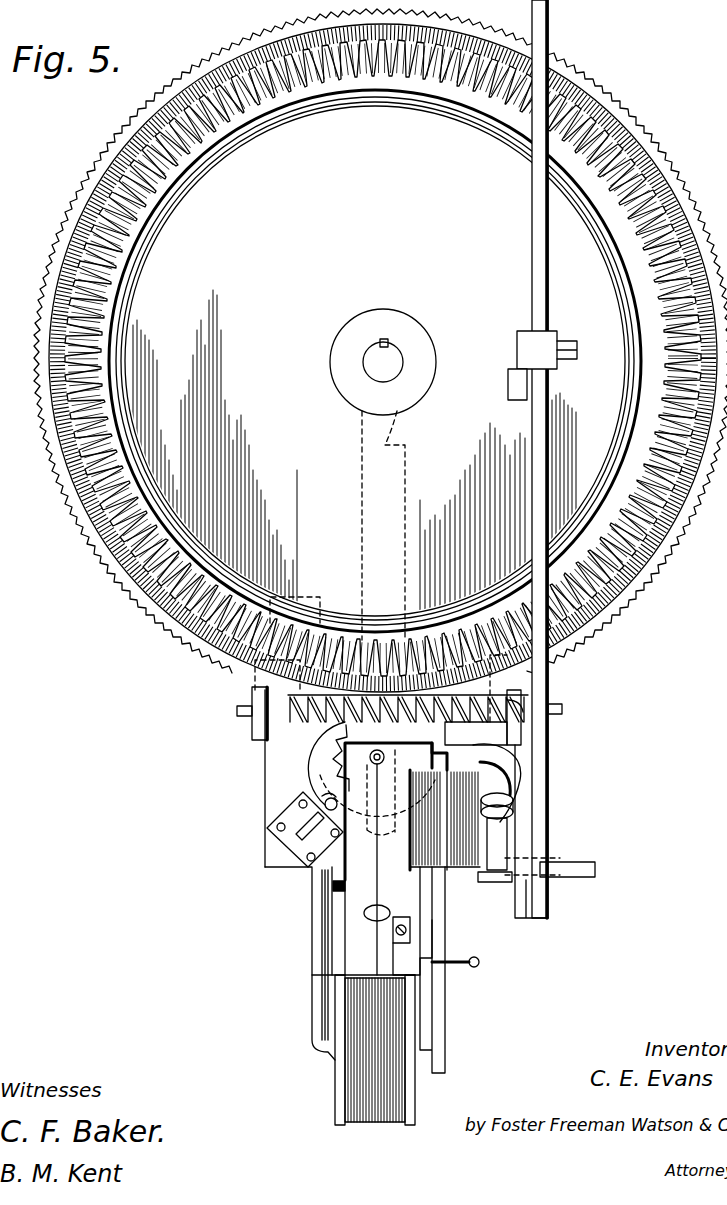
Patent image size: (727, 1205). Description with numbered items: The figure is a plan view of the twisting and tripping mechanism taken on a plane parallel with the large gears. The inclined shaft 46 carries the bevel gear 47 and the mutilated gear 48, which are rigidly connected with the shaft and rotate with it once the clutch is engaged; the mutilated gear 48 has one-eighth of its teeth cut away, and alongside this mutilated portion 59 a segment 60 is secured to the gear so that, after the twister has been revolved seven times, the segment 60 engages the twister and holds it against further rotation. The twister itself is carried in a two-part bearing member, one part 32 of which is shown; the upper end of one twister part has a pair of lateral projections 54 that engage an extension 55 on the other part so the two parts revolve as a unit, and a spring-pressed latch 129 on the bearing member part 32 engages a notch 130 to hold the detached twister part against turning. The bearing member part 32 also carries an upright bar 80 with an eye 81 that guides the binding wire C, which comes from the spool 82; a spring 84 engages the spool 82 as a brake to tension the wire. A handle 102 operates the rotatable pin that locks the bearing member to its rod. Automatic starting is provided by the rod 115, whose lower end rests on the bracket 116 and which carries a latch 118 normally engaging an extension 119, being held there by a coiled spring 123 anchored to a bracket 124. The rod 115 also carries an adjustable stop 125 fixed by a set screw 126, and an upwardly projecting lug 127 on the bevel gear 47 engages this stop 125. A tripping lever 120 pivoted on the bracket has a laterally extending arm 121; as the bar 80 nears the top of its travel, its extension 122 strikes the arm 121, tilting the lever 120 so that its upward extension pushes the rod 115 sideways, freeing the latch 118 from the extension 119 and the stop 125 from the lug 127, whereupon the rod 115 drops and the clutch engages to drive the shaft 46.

The inclined shaft 46 is at (374, 360).
The bevel gear 47 is at (375, 365).
The mutilated gear 48 is at (626, 604).
The rod 115 is at (531, 186).
The stop 125 is at (522, 338).
The set screw 126 is at (566, 339).
The lug 127 is at (508, 392).
The bracket 124 is at (250, 690).
The segment 60 is at (275, 696).
The mutilated portion 59 is at (500, 700).
The extension 122 is at (434, 736).
The lateral projections 54 is at (372, 757).
The coiled spring 123 is at (332, 726).
The eye 81 is at (345, 768).
The extension 55 is at (377, 811).
The bearing member part 32 is at (273, 811).
The notch 130 is at (322, 800).
The spring-pressed latch 129 is at (316, 805).
The upright bar 80 is at (353, 895).
The tripping lever 120 is at (500, 775).
The laterally extending arm 121 is at (480, 806).
The extension 119 is at (507, 882).
The latch 118 is at (515, 868).
The bracket 116 is at (580, 868).
The binding wire C is at (375, 952).
The spring 84 is at (435, 955).
The handle 102 is at (470, 971).
The spool 82 is at (337, 1086).